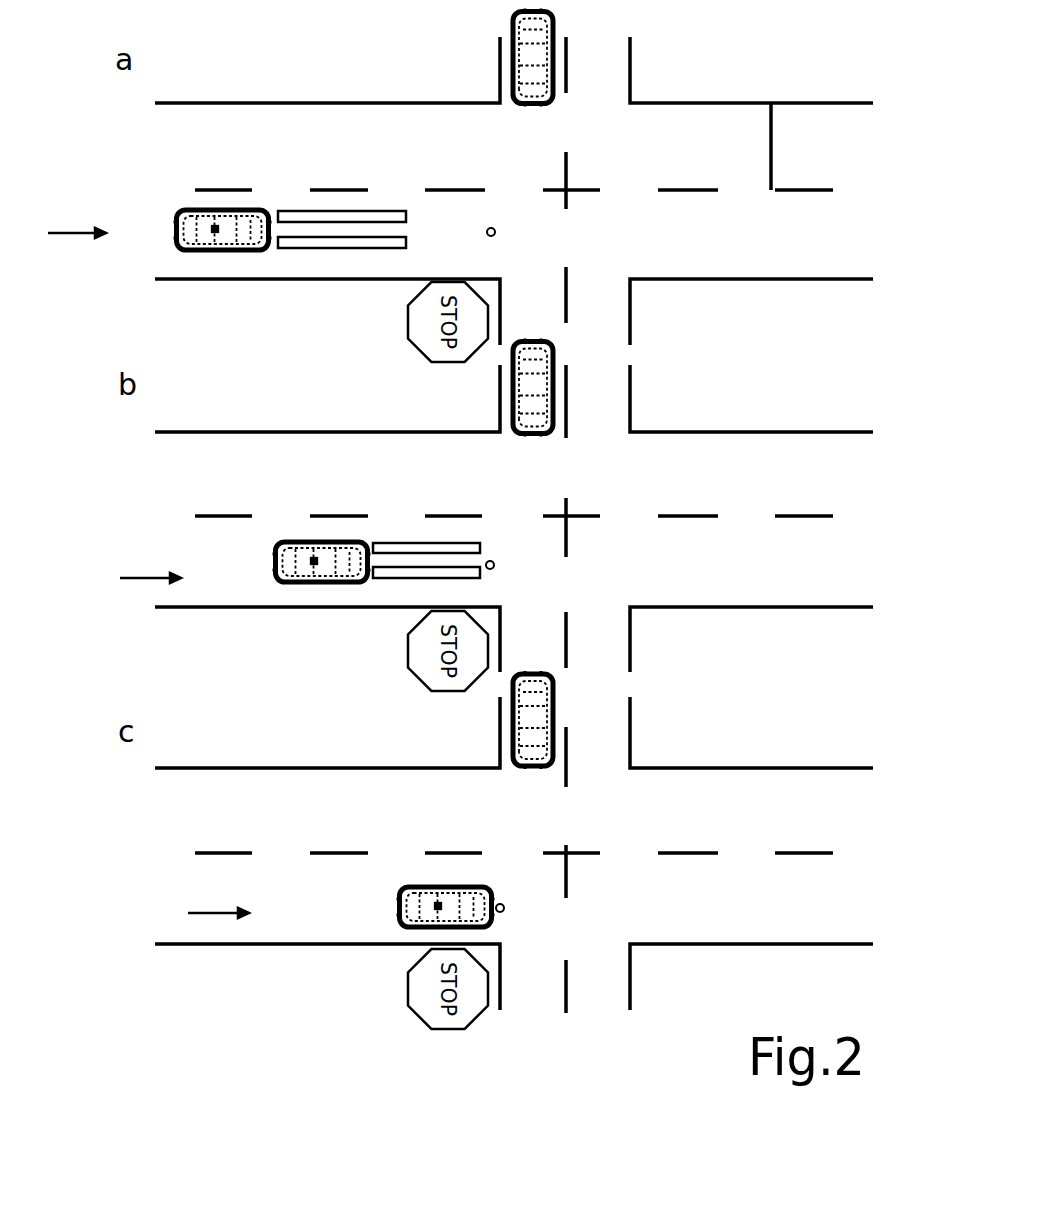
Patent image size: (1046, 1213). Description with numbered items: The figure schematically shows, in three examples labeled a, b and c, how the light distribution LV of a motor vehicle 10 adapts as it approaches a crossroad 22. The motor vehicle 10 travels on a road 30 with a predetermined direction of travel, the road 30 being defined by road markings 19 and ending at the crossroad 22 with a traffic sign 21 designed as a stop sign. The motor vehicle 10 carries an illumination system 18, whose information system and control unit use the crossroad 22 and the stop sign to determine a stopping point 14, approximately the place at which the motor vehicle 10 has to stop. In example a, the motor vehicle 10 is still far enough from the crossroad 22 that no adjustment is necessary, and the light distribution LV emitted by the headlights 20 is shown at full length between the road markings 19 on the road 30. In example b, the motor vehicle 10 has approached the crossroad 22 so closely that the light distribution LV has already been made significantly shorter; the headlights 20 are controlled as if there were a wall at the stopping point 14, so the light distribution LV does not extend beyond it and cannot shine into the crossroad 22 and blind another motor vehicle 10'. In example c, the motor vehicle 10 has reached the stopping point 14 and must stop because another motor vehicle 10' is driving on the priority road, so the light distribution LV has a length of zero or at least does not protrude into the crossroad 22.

The motor vehicle 10 is at (305, 571).
The other motor vehicle 10' is at (514, 385).
The stopping point 14 is at (487, 232).
The illumination system 18 is at (215, 226).
The road markings 19 is at (361, 189).
The headlights 20 is at (267, 213).
The traffic sign 21 is at (440, 364).
The crossroad 22 is at (718, 59).
The road 30 is at (76, 226).
The light distribution LV is at (292, 214).